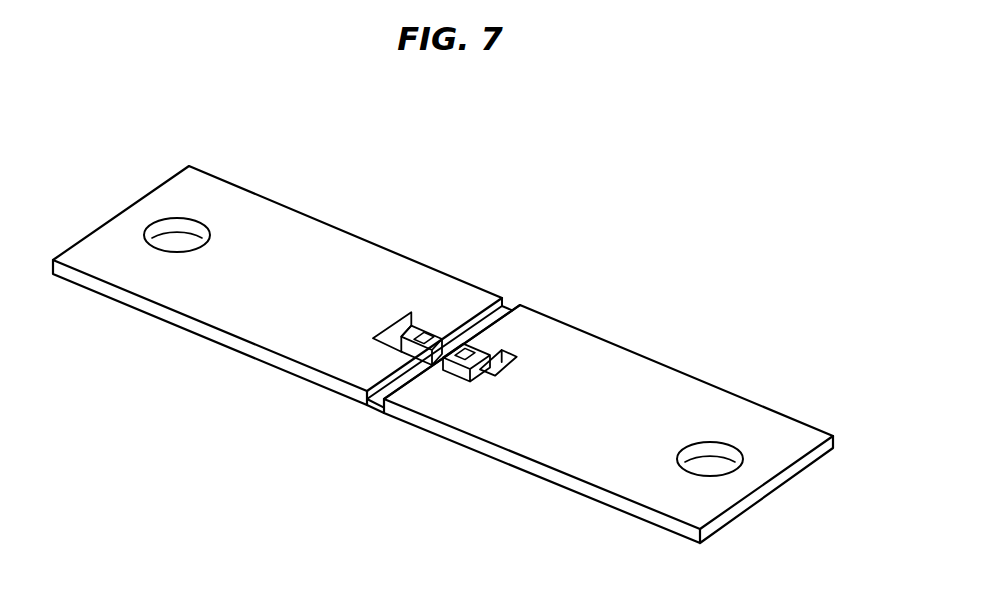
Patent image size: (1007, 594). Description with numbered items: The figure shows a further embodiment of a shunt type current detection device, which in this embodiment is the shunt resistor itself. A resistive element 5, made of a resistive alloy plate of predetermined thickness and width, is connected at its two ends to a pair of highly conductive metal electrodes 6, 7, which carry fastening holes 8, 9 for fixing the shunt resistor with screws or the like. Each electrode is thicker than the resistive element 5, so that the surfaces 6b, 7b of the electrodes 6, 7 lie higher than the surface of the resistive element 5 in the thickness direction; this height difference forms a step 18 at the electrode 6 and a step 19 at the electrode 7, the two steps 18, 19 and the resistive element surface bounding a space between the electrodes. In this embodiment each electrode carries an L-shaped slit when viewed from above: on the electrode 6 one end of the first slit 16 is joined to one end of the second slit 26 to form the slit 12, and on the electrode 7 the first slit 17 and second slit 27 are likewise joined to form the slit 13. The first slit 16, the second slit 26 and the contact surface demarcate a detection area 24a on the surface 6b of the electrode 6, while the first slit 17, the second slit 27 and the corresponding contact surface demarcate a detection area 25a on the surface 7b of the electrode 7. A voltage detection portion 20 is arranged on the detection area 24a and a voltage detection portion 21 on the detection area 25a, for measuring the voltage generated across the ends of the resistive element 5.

The resistive element 5 is at (374, 403).
The electrode 6 is at (297, 211).
The surface of the electrode 6b is at (330, 246).
The electrode 7 is at (612, 343).
The surface of the electrode 7b is at (662, 386).
The fastening hole 8 is at (168, 226).
The fastening hole 9 is at (727, 452).
The slit 12 is at (372, 326).
The slit 13 is at (493, 387).
The first slit 16 is at (416, 330).
The first slit 17 is at (480, 348).
The step 18 is at (412, 375).
The step 19 is at (393, 384).
The voltage detection portion 20 is at (428, 334).
The voltage detection portion 21 is at (467, 349).
The detection area 24a is at (449, 326).
The detection area 25a is at (488, 337).
The second slit 26 is at (398, 332).
The second slit 27 is at (500, 378).